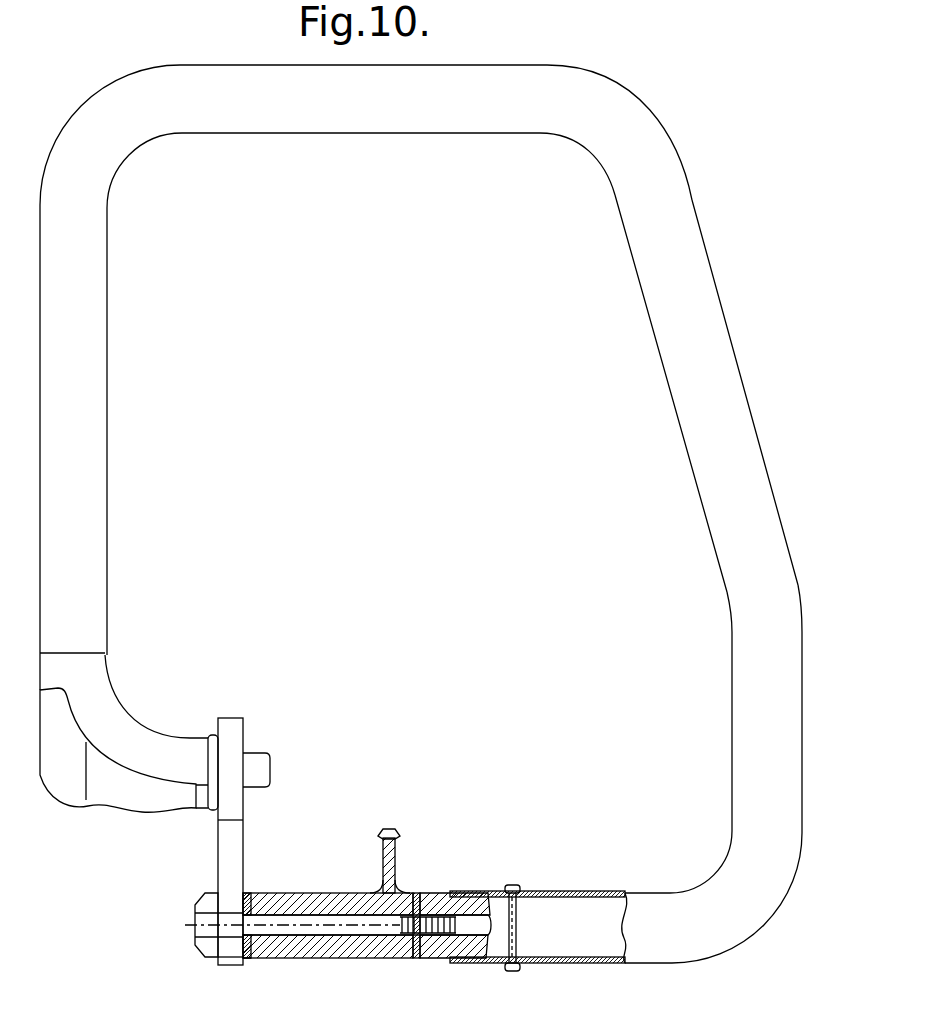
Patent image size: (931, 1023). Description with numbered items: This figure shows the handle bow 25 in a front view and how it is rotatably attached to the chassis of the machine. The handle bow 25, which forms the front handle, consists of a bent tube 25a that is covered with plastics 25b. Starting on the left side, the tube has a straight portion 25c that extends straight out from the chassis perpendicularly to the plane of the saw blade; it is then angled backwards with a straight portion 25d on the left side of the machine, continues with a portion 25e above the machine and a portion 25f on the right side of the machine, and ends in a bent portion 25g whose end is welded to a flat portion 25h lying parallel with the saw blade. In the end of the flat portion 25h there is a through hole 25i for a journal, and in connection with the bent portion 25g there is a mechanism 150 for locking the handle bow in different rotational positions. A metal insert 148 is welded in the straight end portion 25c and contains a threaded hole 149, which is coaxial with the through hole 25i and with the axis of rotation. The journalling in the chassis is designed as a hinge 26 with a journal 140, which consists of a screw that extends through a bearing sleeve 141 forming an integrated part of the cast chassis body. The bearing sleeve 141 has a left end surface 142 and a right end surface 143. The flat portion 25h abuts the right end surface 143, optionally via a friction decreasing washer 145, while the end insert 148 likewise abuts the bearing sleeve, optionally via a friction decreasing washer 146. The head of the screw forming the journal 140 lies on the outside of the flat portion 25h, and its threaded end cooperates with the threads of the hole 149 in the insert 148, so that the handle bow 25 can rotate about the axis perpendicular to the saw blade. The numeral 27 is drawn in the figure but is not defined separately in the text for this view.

The handle bow 25 is at (429, 517).
The bent tube 25a is at (103, 718).
The plastics 25b is at (565, 892).
The straight portion 25c is at (573, 945).
The straight portion 25d is at (720, 458).
The portion above the machine 25e is at (466, 99).
The portion on the right side 25f is at (92, 490).
The bent portion 25g is at (137, 718).
The flat portion 25h is at (227, 858).
The through hole 25i is at (272, 932).
The rotational hinge 26 is at (192, 925).
The bolt shank 27 is at (345, 925).
The journal 140 is at (333, 920).
The bearing sleeve 141 is at (323, 891).
The left end surface 142 is at (252, 903).
The right end surface 143 is at (268, 953).
The friction decreasing washer 145 is at (248, 963).
The friction decreasing washer 146 is at (417, 893).
The metal insert 148 is at (470, 902).
The threaded hole 149 is at (462, 893).
The mechanism 150 is at (118, 811).